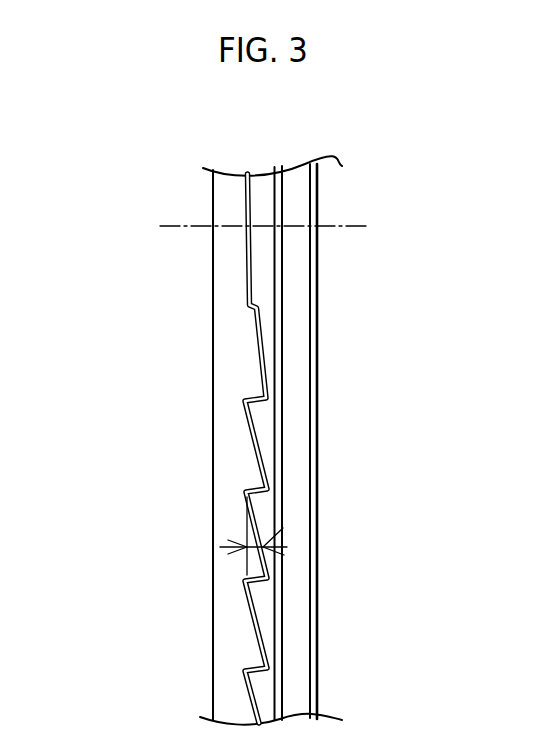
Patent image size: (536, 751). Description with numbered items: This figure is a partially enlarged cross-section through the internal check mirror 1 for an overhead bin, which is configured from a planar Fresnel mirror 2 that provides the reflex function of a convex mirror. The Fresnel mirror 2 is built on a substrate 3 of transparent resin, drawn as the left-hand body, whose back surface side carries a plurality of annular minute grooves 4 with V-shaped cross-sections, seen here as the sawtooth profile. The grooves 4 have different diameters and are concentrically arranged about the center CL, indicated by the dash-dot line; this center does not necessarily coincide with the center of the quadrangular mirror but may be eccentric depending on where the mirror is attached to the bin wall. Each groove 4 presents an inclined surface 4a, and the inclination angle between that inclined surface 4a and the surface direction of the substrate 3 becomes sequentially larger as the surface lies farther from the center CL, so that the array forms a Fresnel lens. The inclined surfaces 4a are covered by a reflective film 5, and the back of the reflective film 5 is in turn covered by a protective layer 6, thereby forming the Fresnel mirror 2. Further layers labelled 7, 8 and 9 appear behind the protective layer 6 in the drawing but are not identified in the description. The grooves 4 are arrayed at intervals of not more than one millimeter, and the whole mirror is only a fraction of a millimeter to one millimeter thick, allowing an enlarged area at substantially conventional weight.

The internal check mirror 1 is at (167, 287).
The Fresnel mirror 2 is at (278, 335).
The substrate 3 is at (227, 342).
The annular minute grooves 4 is at (255, 624).
The inclined surface 4a is at (255, 364).
The reflective film 5 is at (263, 373).
The protective layer 6 is at (265, 430).
The third layer 7 is at (300, 577).
The fourth layer 8 is at (277, 497).
The outer layer 9 is at (313, 640).
The center CL is at (177, 226).